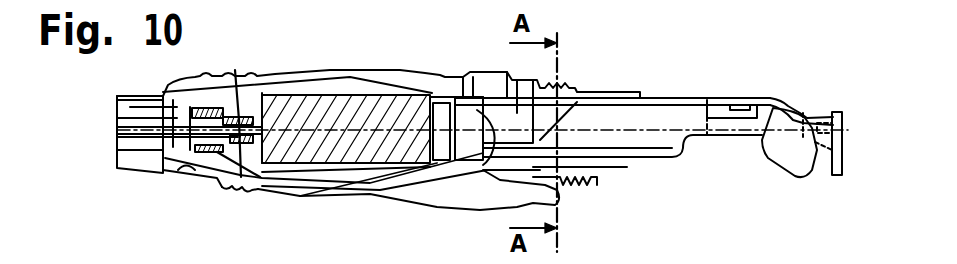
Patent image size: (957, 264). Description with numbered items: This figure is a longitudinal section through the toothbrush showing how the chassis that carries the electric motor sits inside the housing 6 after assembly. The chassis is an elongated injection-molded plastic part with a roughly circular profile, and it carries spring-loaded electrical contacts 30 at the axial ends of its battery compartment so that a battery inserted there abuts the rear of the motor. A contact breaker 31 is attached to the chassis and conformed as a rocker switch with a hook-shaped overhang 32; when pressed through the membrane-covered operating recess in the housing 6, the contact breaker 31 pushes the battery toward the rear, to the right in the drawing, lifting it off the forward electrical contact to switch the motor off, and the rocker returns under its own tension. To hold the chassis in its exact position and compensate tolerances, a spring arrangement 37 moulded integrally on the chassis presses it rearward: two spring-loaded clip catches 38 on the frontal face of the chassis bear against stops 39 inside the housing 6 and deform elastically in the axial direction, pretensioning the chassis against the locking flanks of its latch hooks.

The housing 6 is at (454, 78).
The spring-loaded electrical contacts 30 is at (478, 80).
The contact breaker 31 is at (386, 178).
The hook-shaped overhang 32 is at (490, 187).
The spring arrangement 37 is at (256, 193).
The spring-loaded clip catches 38 is at (235, 70).
The stops 39 is at (217, 190).